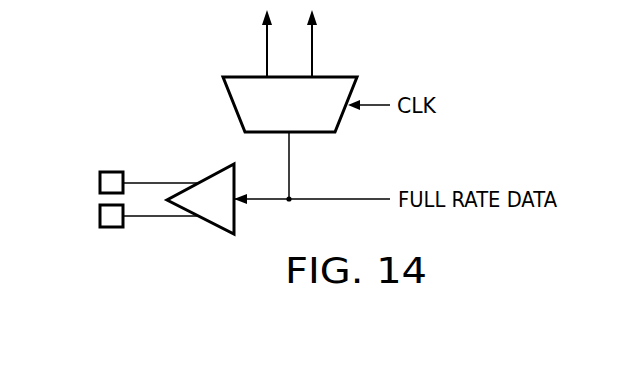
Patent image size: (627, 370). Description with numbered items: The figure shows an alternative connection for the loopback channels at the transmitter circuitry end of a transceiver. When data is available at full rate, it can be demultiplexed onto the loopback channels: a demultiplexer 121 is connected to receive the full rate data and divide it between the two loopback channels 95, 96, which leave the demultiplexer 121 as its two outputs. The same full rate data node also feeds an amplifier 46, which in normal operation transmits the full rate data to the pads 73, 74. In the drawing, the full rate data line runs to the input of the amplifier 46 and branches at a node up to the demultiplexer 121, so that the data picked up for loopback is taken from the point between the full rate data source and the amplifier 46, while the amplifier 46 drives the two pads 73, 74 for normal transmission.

The demultiplexer 121 is at (269, 121).
The loopback channel 95 is at (266, 48).
The loopback channel 96 is at (313, 48).
The amplifier 46 is at (216, 227).
The pad 73 is at (99, 180).
The pad 74 is at (99, 218).